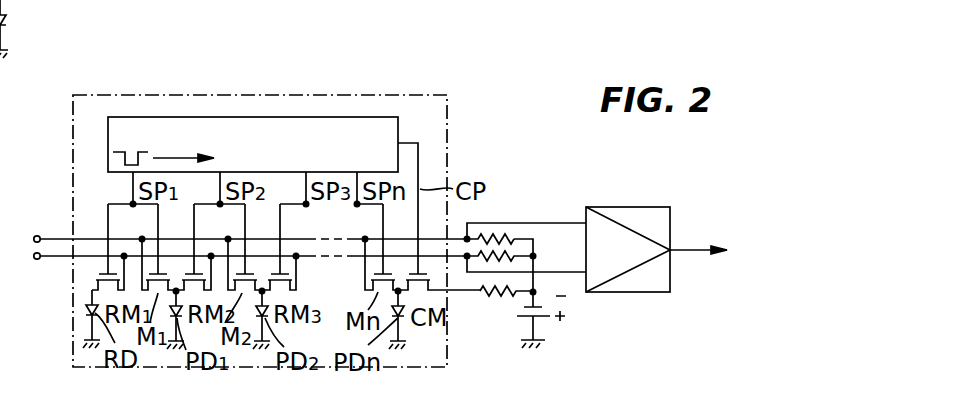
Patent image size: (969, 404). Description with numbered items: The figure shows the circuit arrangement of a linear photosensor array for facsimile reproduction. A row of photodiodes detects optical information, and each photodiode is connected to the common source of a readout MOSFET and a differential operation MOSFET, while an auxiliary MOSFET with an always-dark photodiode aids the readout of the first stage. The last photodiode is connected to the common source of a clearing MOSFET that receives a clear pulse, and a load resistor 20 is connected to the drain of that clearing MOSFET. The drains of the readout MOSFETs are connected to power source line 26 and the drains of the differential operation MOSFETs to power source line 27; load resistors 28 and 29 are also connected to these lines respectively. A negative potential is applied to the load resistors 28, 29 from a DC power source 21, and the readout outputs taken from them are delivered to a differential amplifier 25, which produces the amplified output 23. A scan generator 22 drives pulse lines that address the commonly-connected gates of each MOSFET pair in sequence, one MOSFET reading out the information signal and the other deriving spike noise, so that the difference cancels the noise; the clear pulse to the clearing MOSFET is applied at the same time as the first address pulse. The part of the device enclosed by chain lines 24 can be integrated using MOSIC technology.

The load resistor 20 is at (482, 294).
The DC power source 21 is at (540, 318).
The scan generator 22 is at (404, 118).
The output signal 23 is at (684, 250).
The chain lines 24 is at (447, 120).
The differential amplifier 25 is at (627, 207).
The power source line 26 is at (39, 236).
The power source line 27 is at (39, 259).
The load resistor 28 is at (489, 236).
The load resistor 29 is at (514, 252).